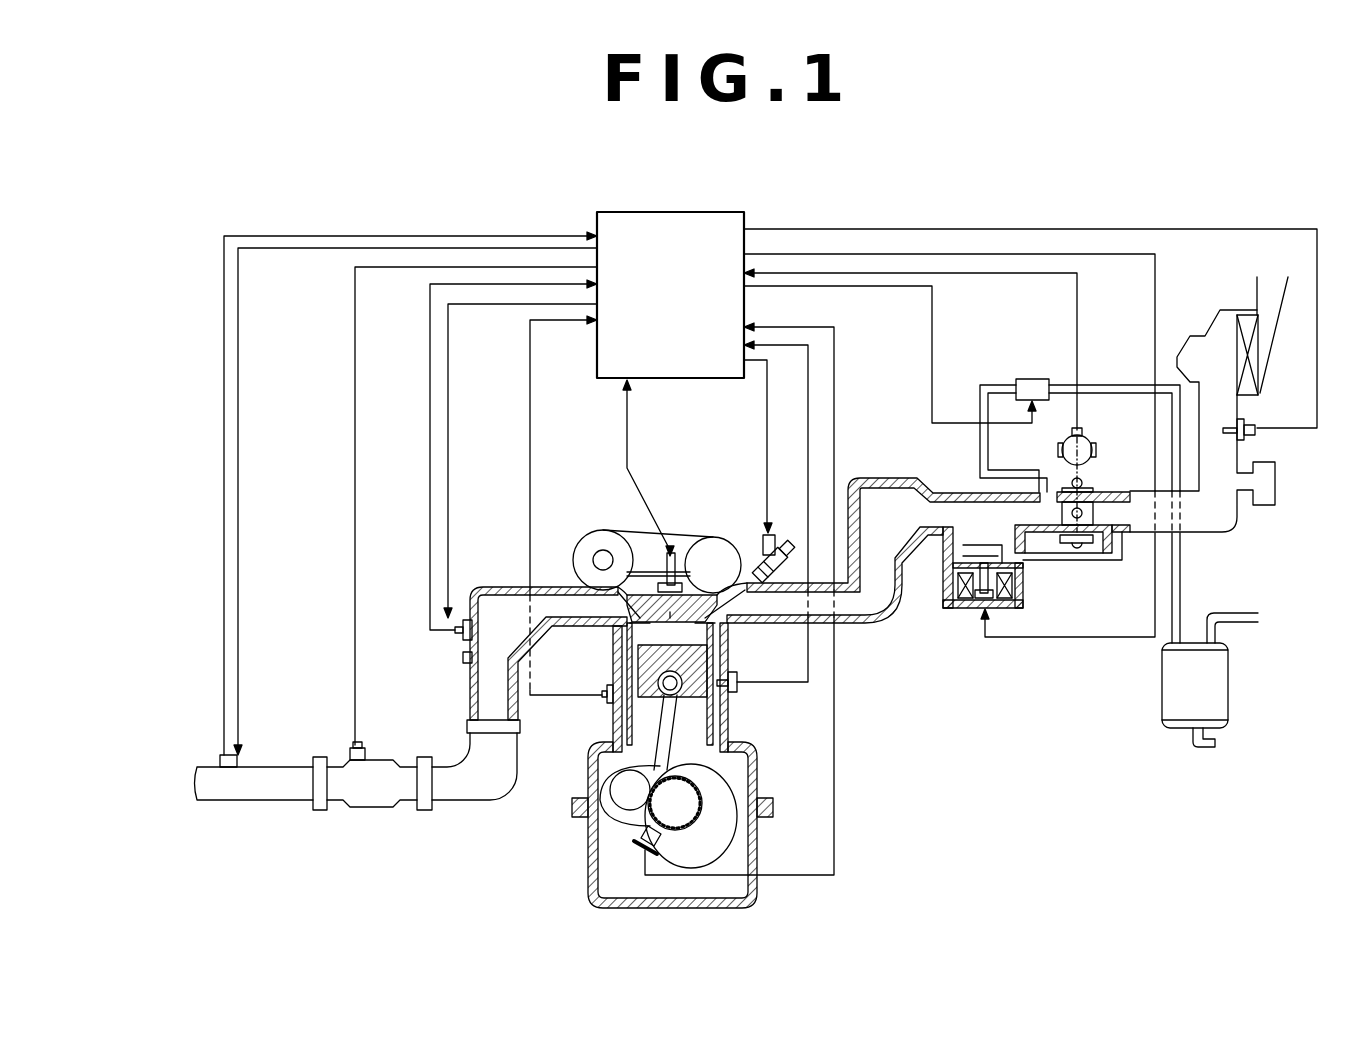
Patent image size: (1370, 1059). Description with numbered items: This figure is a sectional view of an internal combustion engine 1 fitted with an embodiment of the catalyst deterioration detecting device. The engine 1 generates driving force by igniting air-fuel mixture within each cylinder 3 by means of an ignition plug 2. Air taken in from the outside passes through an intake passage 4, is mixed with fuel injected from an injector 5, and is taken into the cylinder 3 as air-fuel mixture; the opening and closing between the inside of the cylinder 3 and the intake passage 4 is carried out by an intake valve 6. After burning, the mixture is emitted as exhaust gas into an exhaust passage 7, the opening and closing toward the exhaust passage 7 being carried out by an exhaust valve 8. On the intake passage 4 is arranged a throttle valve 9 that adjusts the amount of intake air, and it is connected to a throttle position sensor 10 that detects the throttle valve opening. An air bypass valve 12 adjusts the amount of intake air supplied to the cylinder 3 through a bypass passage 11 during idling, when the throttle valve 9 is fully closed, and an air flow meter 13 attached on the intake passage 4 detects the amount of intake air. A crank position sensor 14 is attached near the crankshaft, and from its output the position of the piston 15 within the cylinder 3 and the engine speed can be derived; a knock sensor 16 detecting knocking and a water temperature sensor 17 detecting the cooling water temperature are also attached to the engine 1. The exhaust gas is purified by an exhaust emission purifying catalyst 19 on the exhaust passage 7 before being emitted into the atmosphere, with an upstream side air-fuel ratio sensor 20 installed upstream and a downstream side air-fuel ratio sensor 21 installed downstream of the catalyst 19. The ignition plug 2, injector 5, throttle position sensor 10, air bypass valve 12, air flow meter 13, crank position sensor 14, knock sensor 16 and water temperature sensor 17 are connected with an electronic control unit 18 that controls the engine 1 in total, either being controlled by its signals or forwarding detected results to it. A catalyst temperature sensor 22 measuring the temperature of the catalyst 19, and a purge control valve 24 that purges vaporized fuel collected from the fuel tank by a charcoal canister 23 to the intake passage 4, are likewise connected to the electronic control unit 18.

The engine 1 is at (868, 748).
The ignition plug 2 is at (667, 556).
The cylinder 3 is at (608, 647).
The intake passage 4 is at (882, 605).
The injector 5 is at (755, 568).
The intake valve 6 is at (735, 625).
The exhaust passage 7 is at (460, 705).
The exhaust valve 8 is at (645, 640).
The throttle valve 9 is at (1090, 537).
The throttle position sensor 10 is at (1085, 447).
The bypass passage 11 is at (1053, 558).
The air bypass valve 12 is at (972, 610).
The air flow meter 13 is at (1250, 440).
The crank position sensor 14 is at (637, 838).
The piston 15 is at (608, 725).
The knock sensor 16 is at (603, 703).
The water temperature sensor 17 is at (738, 695).
The electronic control unit 18 is at (668, 222).
The exhaust emission purifying catalyst 19 is at (372, 800).
The upstream side air-fuel ratio sensor 20 is at (462, 650).
The downstream side air-fuel ratio sensor 21 is at (220, 760).
The catalyst temperature sensor 22 is at (350, 757).
The charcoal canister 23 is at (1215, 690).
The purge control valve 24 is at (1037, 380).